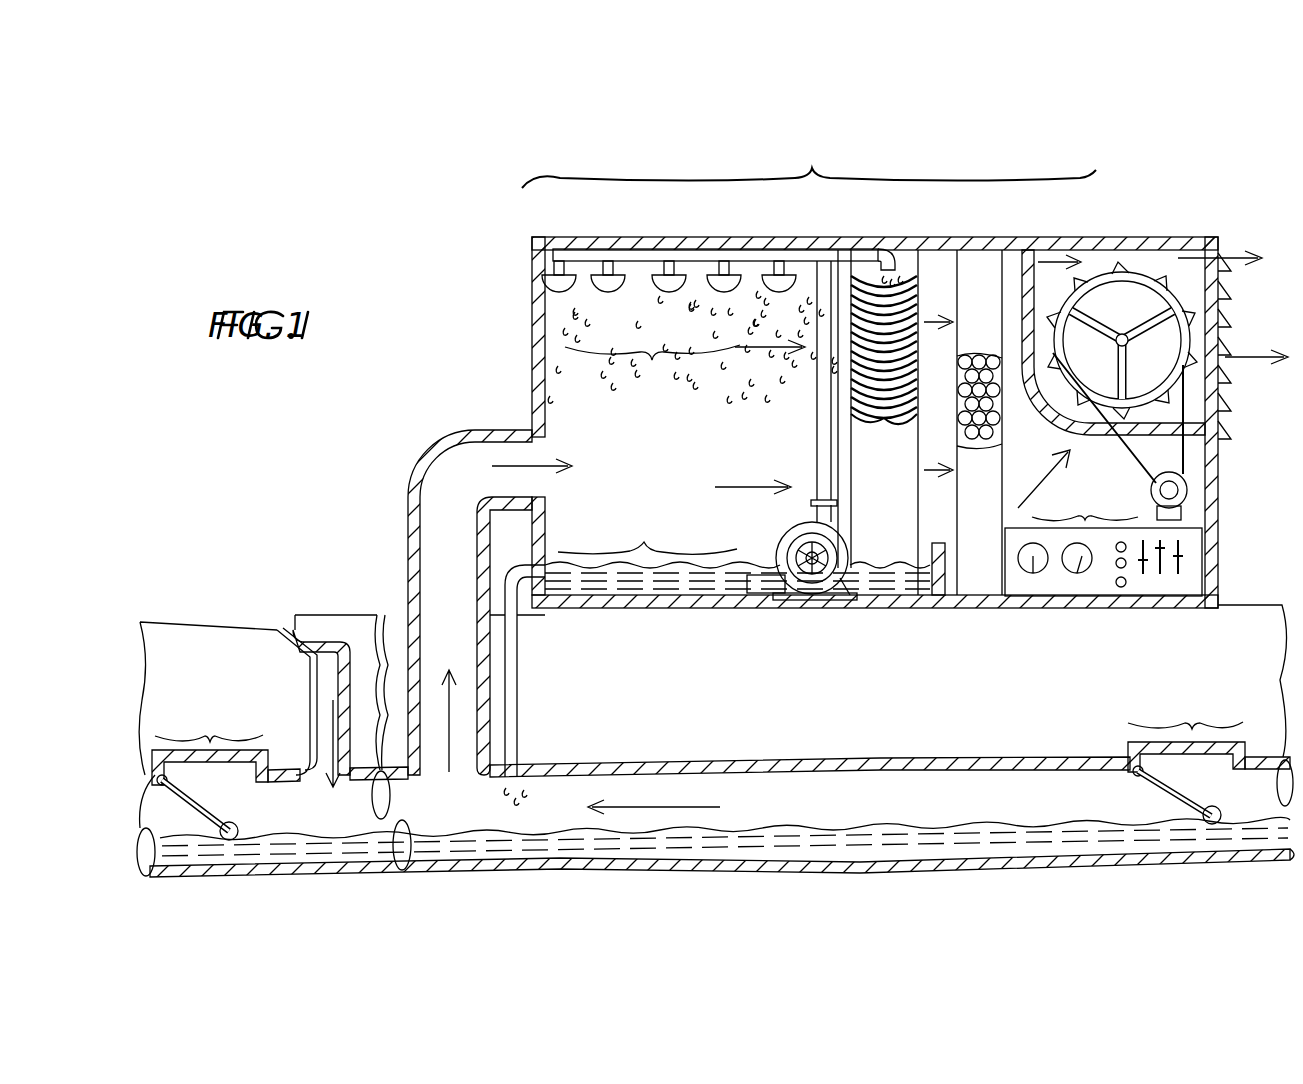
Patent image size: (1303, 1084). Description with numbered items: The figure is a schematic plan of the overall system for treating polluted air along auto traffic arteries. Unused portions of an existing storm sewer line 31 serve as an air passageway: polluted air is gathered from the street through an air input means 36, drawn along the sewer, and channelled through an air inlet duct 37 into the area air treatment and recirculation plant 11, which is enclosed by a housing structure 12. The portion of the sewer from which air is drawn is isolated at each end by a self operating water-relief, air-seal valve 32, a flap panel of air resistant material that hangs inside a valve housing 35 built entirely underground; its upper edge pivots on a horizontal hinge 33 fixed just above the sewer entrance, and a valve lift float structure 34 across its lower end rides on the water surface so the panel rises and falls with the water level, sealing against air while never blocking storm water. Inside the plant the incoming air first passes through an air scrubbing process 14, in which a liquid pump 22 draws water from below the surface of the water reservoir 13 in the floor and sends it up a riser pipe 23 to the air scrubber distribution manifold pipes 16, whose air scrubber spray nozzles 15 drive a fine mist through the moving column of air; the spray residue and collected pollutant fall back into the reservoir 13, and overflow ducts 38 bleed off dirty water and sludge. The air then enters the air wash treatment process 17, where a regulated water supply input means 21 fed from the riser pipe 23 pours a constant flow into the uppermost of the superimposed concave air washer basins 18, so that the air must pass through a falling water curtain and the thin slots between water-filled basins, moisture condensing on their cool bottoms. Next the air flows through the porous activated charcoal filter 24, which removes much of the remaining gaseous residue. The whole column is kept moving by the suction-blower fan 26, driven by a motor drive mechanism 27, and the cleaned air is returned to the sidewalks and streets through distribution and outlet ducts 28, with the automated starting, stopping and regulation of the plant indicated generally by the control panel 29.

The area air treatment and recirculation plant 11 is at (810, 158).
The housing structure 12 is at (1160, 222).
The water reservoir 13 is at (645, 540).
The air scrubbing process 14 is at (651, 362).
The air scrubber spray nozzles 15 is at (565, 284).
The air scrubber distribution manifold pipes 16 is at (712, 286).
The air wash treatment process 17 is at (892, 531).
The air washer basins 18 is at (918, 376).
The water supply input means 21 is at (904, 262).
The liquid pump 22 is at (800, 527).
The riser pipe 23 is at (817, 400).
The charcoal filter 24 is at (992, 297).
The suction-blower fan 26 is at (1150, 268).
The motor drive mechanism 27 is at (1150, 490).
The distribution and outlet ducts 28 is at (1238, 375).
The control panel 29 is at (1082, 508).
The storm sewer line 31 is at (849, 810).
The water-relief, air-seal valve 32 is at (200, 770).
The horizontal hinge 33 is at (158, 785).
The valve lift float structure 34 is at (238, 822).
The valve housing 35 is at (214, 732).
The air input means 36 is at (284, 628).
The air inlet duct 37 is at (402, 516).
The overflow ducts 38 is at (530, 712).